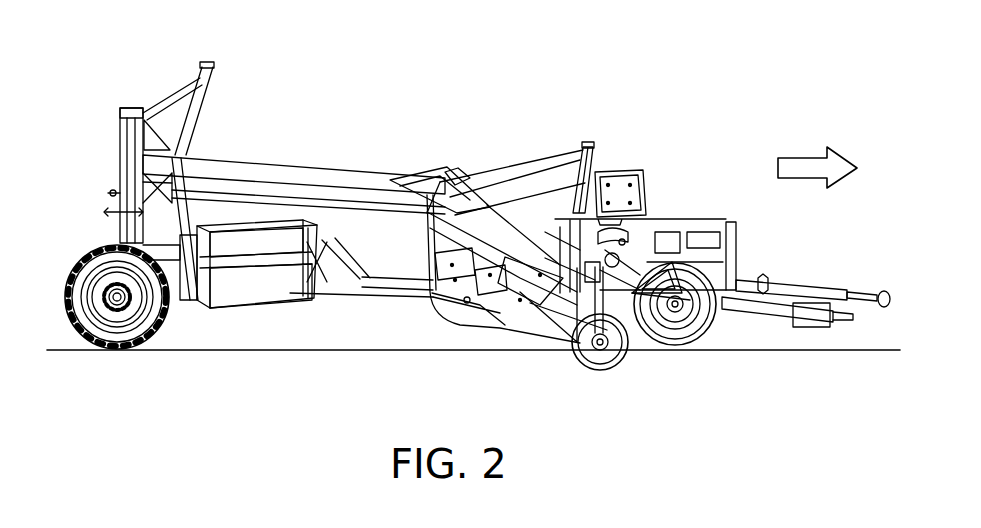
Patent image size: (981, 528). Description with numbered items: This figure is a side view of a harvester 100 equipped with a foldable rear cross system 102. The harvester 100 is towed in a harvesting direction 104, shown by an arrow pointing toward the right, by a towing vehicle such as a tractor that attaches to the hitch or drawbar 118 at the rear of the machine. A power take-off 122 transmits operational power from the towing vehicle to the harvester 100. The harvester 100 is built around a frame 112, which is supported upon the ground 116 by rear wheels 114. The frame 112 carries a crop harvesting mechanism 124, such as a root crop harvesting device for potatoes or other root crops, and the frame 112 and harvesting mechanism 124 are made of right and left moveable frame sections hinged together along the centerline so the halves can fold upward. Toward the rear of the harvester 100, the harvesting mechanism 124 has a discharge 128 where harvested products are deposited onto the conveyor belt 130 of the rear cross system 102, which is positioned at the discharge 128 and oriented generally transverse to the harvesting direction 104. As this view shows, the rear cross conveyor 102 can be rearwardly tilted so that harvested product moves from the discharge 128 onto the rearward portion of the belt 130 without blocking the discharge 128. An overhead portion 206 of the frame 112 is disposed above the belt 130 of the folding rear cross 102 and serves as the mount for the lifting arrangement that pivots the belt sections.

The harvester 100 is at (475, 207).
The foldable rear cross system 102 is at (257, 237).
The harvesting direction 104 is at (798, 158).
The frame 112 is at (507, 243).
The rear wheels 114 is at (110, 350).
The ground 116 is at (410, 352).
The hitch or drawbar 118 is at (785, 308).
The power take-off 122 is at (785, 285).
The crop harvesting mechanism 124 is at (463, 240).
The discharge 128 is at (278, 245).
The conveyor belt 130 is at (277, 277).
The overhead portion 206 is at (320, 178).